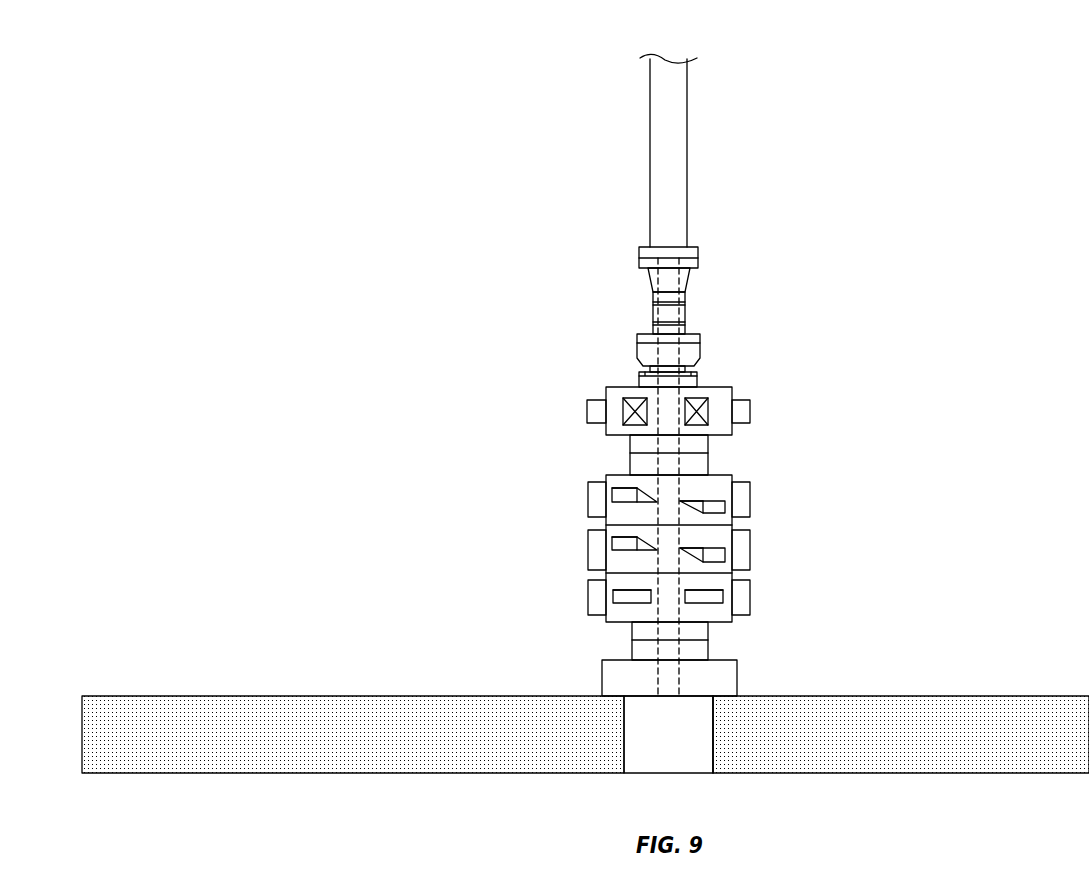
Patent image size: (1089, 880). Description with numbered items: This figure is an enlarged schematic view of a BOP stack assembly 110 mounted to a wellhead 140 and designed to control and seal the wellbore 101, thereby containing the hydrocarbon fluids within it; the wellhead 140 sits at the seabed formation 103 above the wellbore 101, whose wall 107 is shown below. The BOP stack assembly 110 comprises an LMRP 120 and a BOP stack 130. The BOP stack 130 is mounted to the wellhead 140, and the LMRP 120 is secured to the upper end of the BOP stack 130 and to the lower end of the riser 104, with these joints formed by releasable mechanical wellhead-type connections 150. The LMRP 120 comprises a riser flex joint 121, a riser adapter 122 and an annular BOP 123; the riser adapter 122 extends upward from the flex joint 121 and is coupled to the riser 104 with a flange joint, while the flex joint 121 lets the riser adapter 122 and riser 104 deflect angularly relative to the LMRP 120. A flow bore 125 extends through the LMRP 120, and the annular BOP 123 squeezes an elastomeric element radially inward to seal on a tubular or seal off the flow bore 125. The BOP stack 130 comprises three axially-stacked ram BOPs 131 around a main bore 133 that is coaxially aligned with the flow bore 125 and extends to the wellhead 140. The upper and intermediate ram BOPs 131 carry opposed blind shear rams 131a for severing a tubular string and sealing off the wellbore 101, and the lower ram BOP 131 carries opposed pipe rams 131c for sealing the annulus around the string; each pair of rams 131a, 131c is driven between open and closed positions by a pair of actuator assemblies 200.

The wellbore 101 is at (687, 746).
The ground surface / earth formation 103 is at (1017, 696).
The riser 104 is at (681, 150).
The wellbore wall 107 is at (712, 763).
The BOP stack assembly 110 is at (928, 282).
The LMRP 120 is at (590, 346).
The riser flex joint 121 is at (693, 355).
The riser adapter 122 is at (685, 313).
The annular BOP 123 is at (681, 396).
The flow bore 125 is at (658, 398).
The BOP stack 130 is at (649, 554).
The ram BOP 131 is at (617, 508).
The blind shear rams 131a is at (623, 492).
The pipe rams 131c is at (704, 624).
The main bore 133 is at (682, 483).
The wellhead 140 is at (723, 670).
The mechanical wellhead-type connection 150 is at (722, 650).
The actuator assembly 200 is at (586, 577).